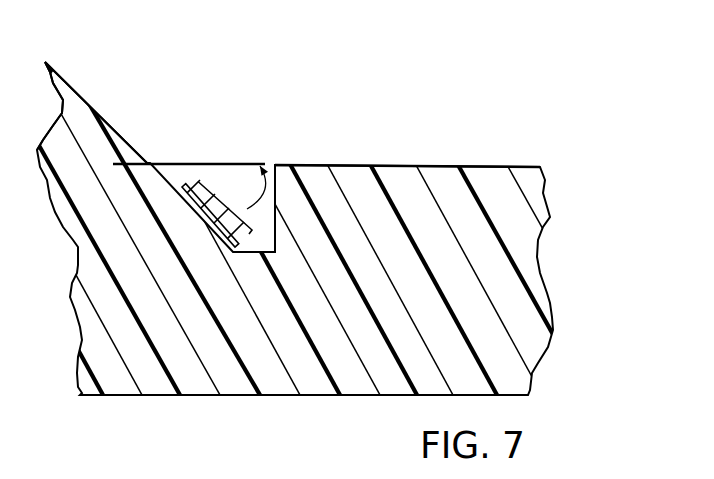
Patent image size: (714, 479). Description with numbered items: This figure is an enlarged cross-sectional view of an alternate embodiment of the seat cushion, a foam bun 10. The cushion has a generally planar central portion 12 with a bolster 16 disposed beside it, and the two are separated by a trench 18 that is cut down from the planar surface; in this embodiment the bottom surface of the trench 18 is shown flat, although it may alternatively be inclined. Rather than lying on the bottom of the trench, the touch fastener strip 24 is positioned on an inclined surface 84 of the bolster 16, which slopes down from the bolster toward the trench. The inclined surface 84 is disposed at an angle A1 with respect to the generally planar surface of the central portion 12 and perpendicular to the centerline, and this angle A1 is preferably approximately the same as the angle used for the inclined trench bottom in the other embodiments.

The foam bun 10 is at (341, 239).
The central portion 12 is at (496, 190).
The bolster 16 is at (65, 88).
The trench 18 is at (253, 152).
The touch fastener strip 24 is at (199, 209).
The inclined surface 84 is at (110, 118).
The angle A1 is at (247, 209).